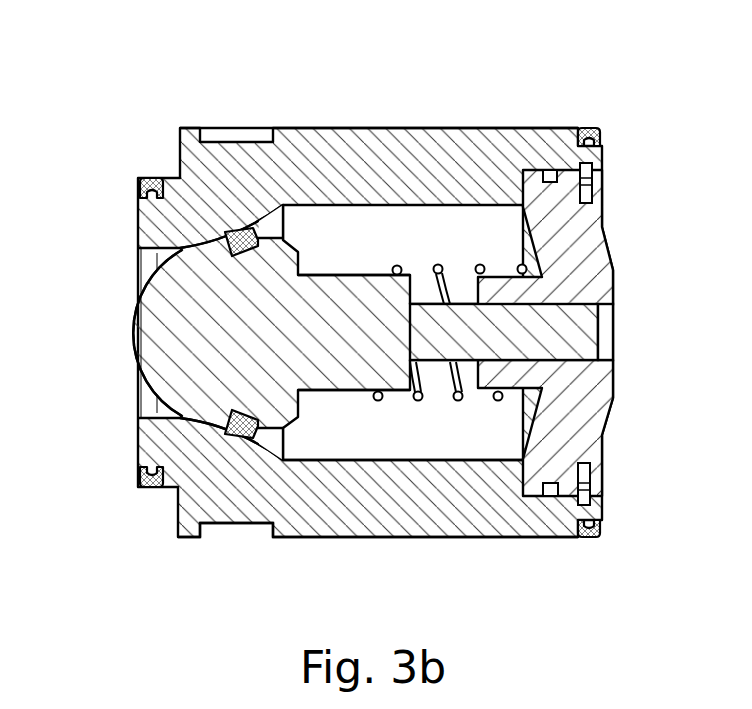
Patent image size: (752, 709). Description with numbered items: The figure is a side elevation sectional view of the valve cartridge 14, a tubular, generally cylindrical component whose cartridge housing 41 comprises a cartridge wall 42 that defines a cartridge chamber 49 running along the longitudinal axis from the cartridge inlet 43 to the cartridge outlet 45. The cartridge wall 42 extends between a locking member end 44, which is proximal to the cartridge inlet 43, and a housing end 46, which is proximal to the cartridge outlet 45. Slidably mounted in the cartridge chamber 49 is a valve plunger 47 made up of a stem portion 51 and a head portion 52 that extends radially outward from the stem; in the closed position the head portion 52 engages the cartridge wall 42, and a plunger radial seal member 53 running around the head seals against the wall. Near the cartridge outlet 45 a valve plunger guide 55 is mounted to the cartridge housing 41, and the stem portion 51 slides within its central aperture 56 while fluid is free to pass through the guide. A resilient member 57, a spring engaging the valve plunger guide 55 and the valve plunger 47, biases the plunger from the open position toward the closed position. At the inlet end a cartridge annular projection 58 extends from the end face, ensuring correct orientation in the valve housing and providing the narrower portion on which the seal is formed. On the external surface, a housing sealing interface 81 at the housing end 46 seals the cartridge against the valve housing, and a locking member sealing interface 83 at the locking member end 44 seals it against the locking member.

The valve cartridge 14 is at (576, 105).
The cartridge housing 41 is at (371, 126).
The cartridge wall 42 is at (340, 478).
The cartridge inlet 43 is at (127, 334).
The locking member end 44 is at (128, 289).
The cartridge outlet 45 is at (615, 282).
The housing end 46 is at (612, 203).
The valve plunger 47 is at (350, 293).
The cartridge chamber 49 is at (392, 450).
The stem portion 51 is at (570, 340).
The head portion 52 is at (203, 360).
The plunger radial seal member 53 is at (220, 423).
The valve plunger guide 55 is at (577, 425).
The central aperture 56 is at (605, 327).
The resilient member 57 is at (482, 264).
The cartridge annular projection 58 is at (141, 216).
The housing sealing interface 81 is at (585, 535).
The locking member sealing interface 83 is at (154, 490).